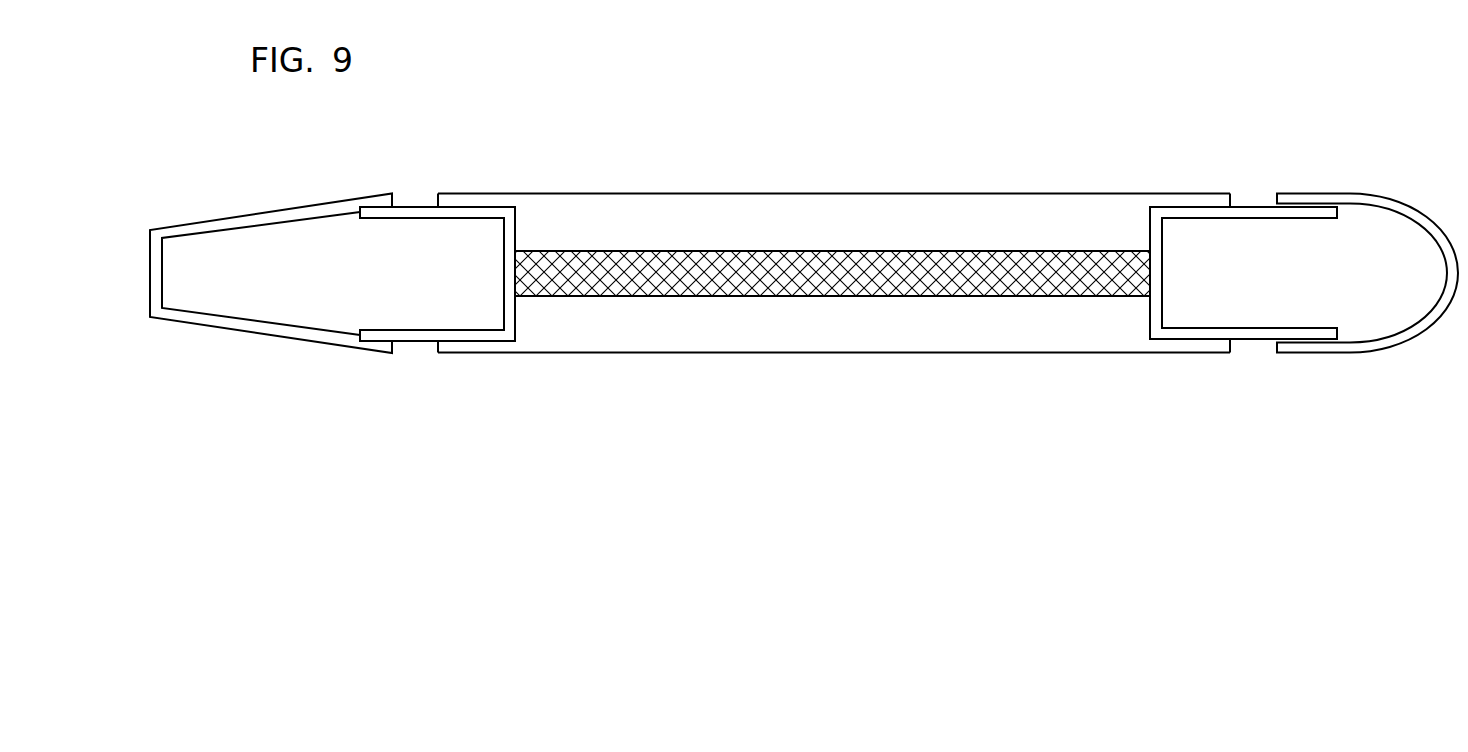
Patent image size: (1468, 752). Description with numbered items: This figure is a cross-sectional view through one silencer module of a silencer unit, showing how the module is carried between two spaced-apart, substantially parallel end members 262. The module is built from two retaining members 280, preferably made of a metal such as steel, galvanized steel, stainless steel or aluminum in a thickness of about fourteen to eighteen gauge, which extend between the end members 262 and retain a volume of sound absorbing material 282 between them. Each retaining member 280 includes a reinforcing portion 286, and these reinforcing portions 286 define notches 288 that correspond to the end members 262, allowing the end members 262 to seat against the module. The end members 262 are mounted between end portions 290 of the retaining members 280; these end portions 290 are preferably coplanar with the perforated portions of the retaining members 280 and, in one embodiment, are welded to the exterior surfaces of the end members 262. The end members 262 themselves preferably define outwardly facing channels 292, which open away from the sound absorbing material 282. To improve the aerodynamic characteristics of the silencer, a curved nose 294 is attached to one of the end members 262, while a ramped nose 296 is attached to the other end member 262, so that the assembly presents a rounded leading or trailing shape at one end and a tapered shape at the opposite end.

The retaining member 280 is at (679, 186).
The sound absorbing material 282 is at (897, 270).
The reinforcing portion 286 is at (837, 230).
The notch 288 is at (517, 232).
The end portion 290 is at (468, 193).
The outwardly facing channel 292 is at (505, 257).
The end member 262 is at (417, 205).
The curved nose 294 is at (1415, 207).
The ramped nose 296 is at (242, 217).